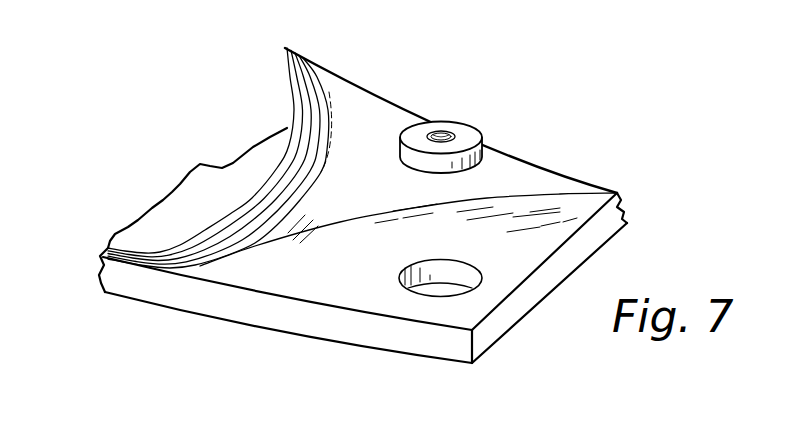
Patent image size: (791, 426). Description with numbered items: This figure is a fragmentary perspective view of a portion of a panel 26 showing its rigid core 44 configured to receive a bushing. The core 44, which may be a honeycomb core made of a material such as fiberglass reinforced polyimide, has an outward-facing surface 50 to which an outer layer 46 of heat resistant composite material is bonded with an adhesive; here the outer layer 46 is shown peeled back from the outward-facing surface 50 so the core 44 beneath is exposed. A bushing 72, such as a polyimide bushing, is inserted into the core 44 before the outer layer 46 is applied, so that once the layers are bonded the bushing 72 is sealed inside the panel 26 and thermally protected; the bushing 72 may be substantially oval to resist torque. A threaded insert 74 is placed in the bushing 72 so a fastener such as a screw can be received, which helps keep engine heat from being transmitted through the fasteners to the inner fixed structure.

The panel 26 is at (388, 215).
The core 44 is at (363, 299).
The outer layer 46 is at (320, 60).
The outward-facing surface 50 is at (368, 252).
The bushing 72 is at (472, 116).
The threaded insert 74 is at (443, 134).